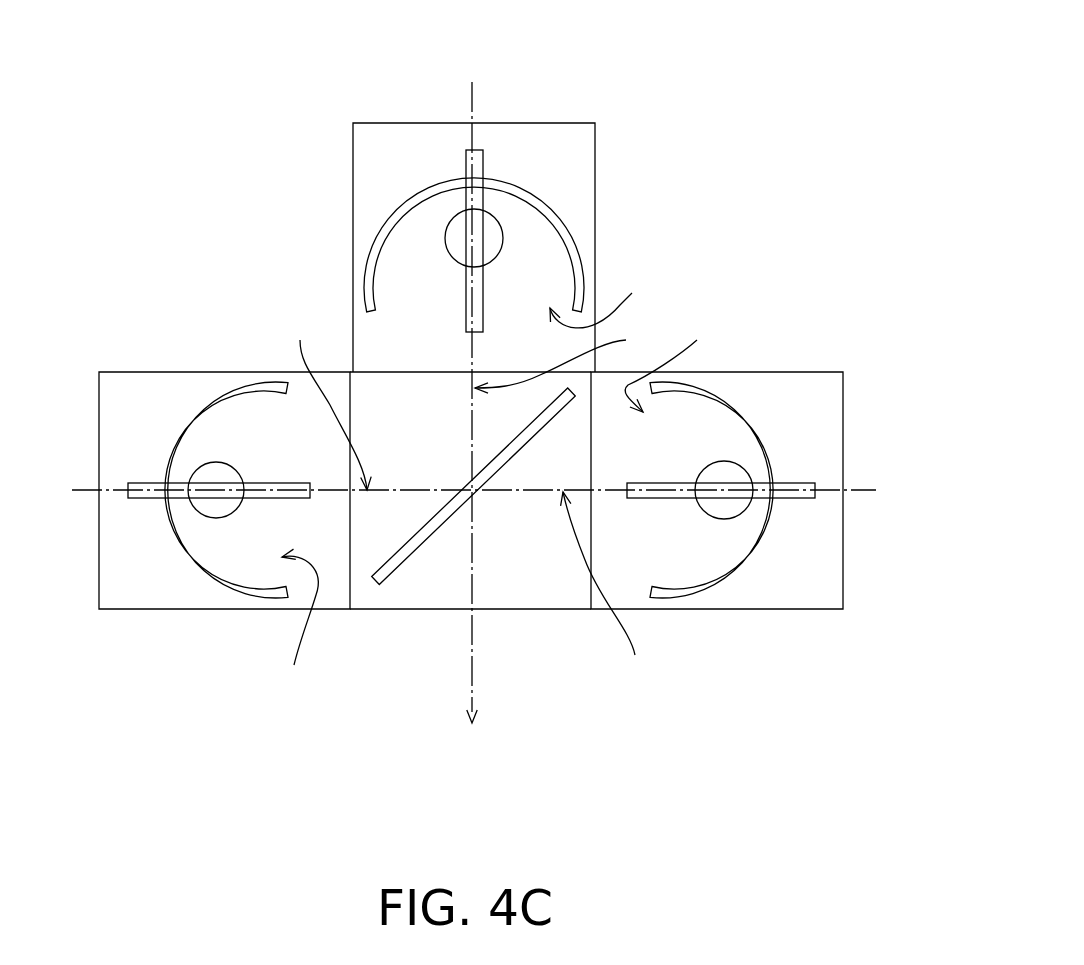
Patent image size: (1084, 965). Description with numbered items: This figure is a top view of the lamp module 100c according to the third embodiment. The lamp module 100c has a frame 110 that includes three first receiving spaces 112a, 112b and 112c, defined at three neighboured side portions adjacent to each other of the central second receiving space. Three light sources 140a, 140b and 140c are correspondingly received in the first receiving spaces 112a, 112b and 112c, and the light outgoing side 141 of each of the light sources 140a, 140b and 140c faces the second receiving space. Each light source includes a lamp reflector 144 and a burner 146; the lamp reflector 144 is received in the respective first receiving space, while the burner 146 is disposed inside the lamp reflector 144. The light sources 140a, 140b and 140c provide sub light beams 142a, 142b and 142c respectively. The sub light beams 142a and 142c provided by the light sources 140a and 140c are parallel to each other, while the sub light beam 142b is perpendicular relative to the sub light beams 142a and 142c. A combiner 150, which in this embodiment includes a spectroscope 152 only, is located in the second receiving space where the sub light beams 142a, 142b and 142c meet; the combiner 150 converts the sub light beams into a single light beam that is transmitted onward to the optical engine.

The lamp module 100c is at (499, 411).
The frame 110 is at (473, 387).
The first receiving space 112a is at (803, 578).
The first receiving space 112b is at (544, 150).
The first receiving space 112c is at (133, 580).
The light source 140a is at (775, 711).
The light source 140b is at (437, 53).
The light source 140c is at (215, 707).
The light outgoing side 141 is at (506, 484).
The sub light beam 142a is at (612, 594).
The sub light beam 142b is at (576, 351).
The sub light beam 142c is at (324, 395).
The lamp reflector 144 is at (398, 218).
The burner 146 is at (463, 218).
The combiner 150 is at (462, 544).
The spectroscope 152 is at (390, 582).